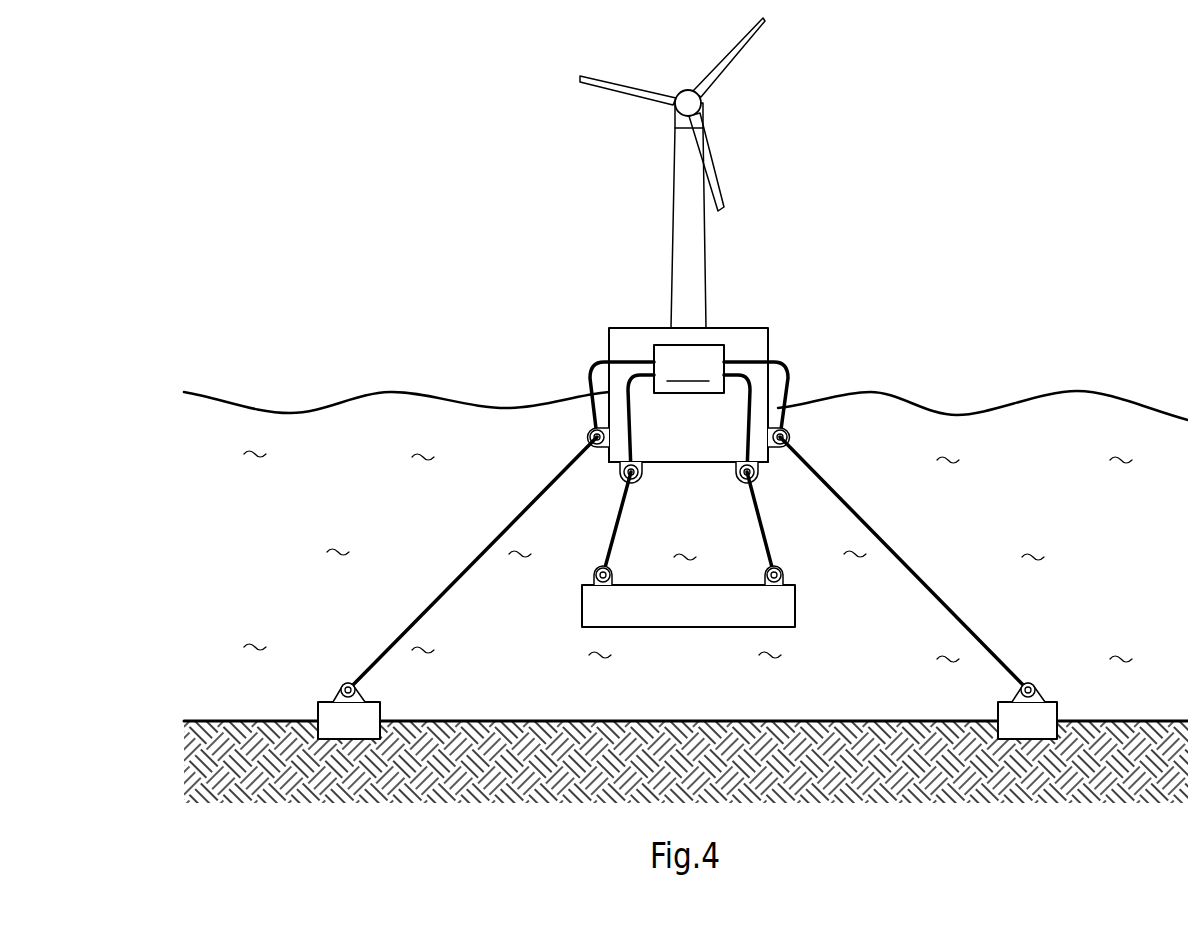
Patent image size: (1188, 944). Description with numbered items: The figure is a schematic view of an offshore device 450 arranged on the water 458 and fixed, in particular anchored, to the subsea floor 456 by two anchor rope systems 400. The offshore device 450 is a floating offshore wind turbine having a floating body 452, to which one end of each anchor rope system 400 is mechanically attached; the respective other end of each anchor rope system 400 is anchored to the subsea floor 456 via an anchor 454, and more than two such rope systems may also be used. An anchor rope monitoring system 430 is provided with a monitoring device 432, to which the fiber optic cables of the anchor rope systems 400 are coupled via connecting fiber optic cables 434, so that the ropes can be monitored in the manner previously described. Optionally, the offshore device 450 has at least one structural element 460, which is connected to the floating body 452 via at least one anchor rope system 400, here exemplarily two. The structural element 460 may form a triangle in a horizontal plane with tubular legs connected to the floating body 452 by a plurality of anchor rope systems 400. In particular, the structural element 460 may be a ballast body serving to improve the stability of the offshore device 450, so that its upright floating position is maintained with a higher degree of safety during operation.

The anchor rope system 400 is at (607, 538).
The anchor rope monitoring system 430 is at (790, 310).
The monitoring device 432 is at (689, 369).
The connecting fiber optic cable 434 is at (590, 375).
The offshore device 450 is at (755, 104).
The floating body 452 is at (694, 452).
The anchor 454 is at (325, 712).
The subsea floor 456 is at (660, 721).
The water 458 is at (1128, 369).
The structural element 460 is at (592, 604).